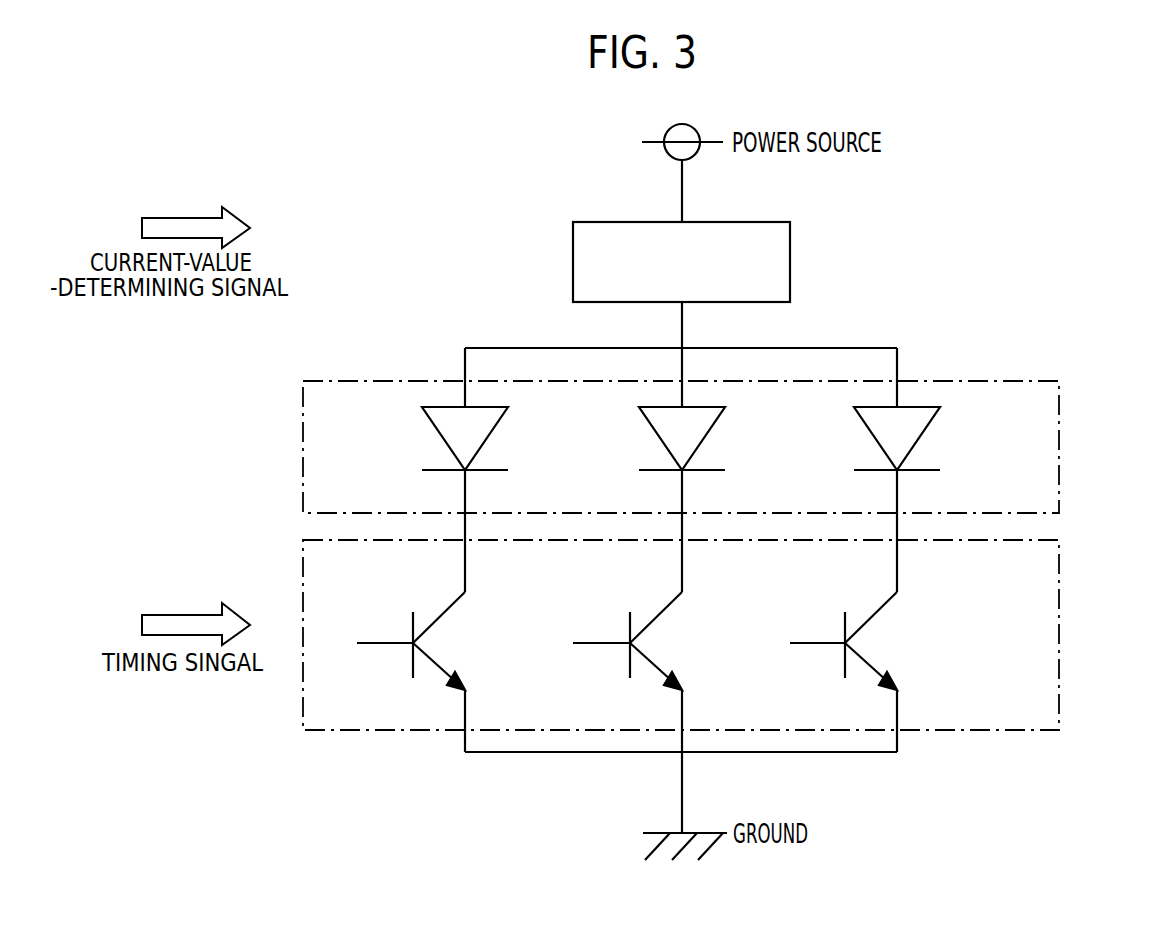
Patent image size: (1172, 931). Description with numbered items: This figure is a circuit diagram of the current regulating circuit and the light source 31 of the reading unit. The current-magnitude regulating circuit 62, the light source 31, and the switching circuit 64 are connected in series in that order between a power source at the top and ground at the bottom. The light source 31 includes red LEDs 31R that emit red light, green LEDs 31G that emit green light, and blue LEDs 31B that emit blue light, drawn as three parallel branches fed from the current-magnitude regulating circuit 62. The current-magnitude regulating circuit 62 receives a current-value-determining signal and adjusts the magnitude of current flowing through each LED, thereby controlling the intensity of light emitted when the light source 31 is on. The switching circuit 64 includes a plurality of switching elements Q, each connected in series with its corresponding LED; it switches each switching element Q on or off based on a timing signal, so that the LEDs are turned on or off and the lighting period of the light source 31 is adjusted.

The current-magnitude regulating circuit 62 is at (790, 238).
The light source 31 is at (1059, 405).
The red LEDs 31R is at (490, 432).
The green LEDs 31G is at (705, 430).
The blue LEDs 31B is at (922, 427).
The switching circuit 64 is at (1059, 578).
The switching elements Q is at (627, 646).